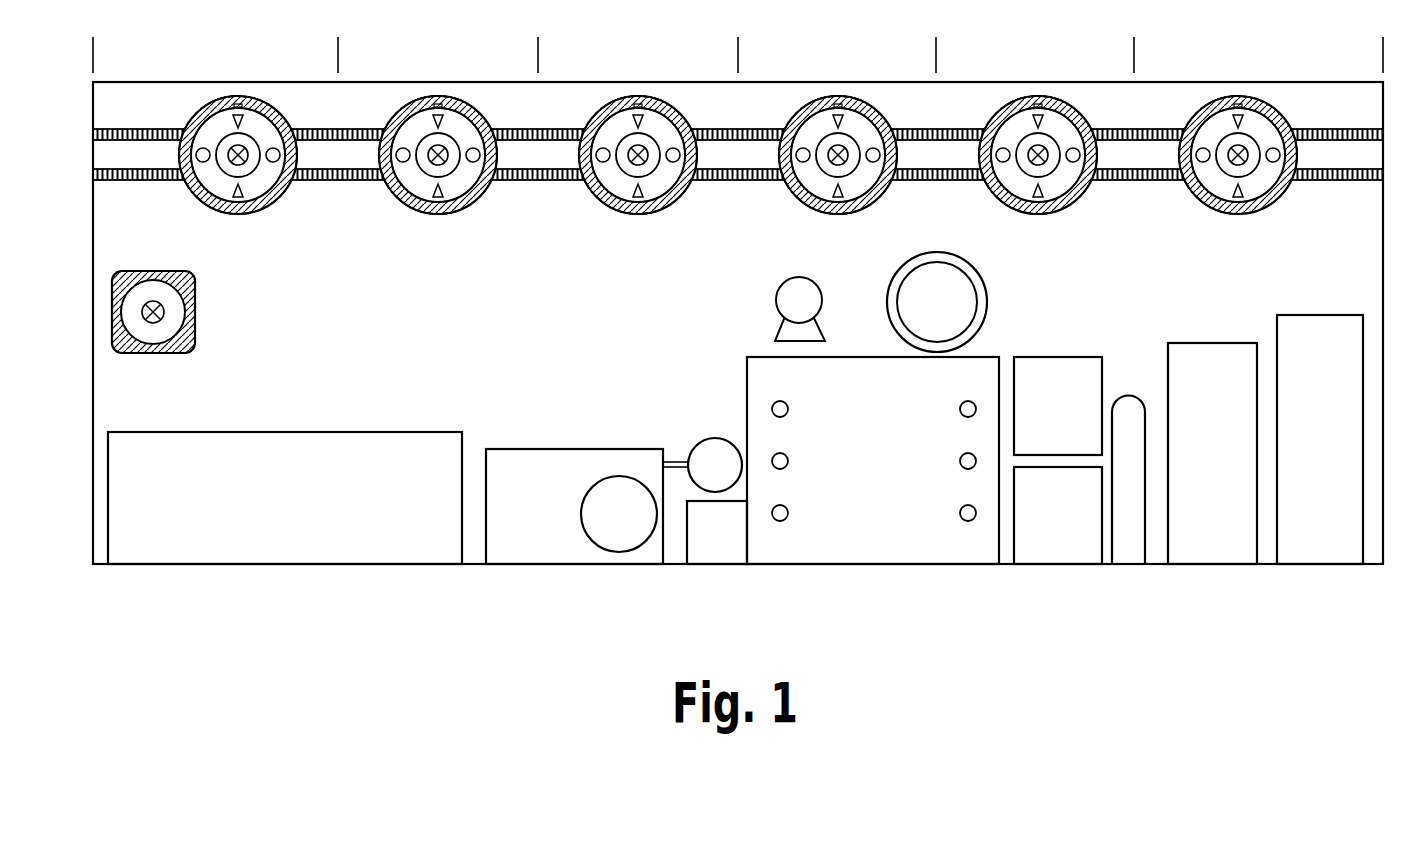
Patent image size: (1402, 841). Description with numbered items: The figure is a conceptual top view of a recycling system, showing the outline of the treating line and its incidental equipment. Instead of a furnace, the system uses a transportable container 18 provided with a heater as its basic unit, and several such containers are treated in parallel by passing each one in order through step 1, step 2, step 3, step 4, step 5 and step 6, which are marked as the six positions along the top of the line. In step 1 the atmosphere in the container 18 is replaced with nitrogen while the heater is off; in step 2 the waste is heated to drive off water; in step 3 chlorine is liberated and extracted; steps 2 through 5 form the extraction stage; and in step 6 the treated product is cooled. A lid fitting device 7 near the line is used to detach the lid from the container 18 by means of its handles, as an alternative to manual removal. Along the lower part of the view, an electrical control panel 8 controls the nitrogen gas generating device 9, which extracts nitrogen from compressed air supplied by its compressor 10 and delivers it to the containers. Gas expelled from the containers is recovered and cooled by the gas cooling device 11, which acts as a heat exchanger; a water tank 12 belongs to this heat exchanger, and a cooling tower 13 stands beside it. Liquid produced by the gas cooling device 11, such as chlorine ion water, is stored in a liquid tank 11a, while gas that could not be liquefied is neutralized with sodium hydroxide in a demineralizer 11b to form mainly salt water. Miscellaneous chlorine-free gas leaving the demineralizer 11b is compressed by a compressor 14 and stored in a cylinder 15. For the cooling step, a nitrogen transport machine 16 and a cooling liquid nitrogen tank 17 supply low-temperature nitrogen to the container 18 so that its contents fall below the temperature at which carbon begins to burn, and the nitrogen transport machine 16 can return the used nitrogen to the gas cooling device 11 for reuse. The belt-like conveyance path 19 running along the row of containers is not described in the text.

The step 1 is at (93, 55).
The step 2 is at (338, 55).
The step 3 is at (538, 55).
The step 4 is at (738, 55).
The step 5 is at (936, 55).
The step 6 is at (1383, 55).
The lid fitting device 7 is at (160, 271).
The electrical control panel 8 is at (320, 432).
The nitrogen gas generating device 9 is at (589, 449).
The compressor 10 is at (701, 479).
The gas cooling device 11 is at (886, 418).
The liquid tank 11a is at (732, 548).
The demineralizer 11b is at (1058, 406).
The water tank 12 is at (786, 313).
The cooling tower 13 is at (922, 316).
The compressor 14 is at (1043, 526).
The cylinder 15 is at (1116, 506).
The nitrogen transport machine 16 is at (1228, 403).
The cooling liquid nitrogen tank 17 is at (1307, 390).
The container 18 is at (268, 210).
The belt 19 is at (332, 182).